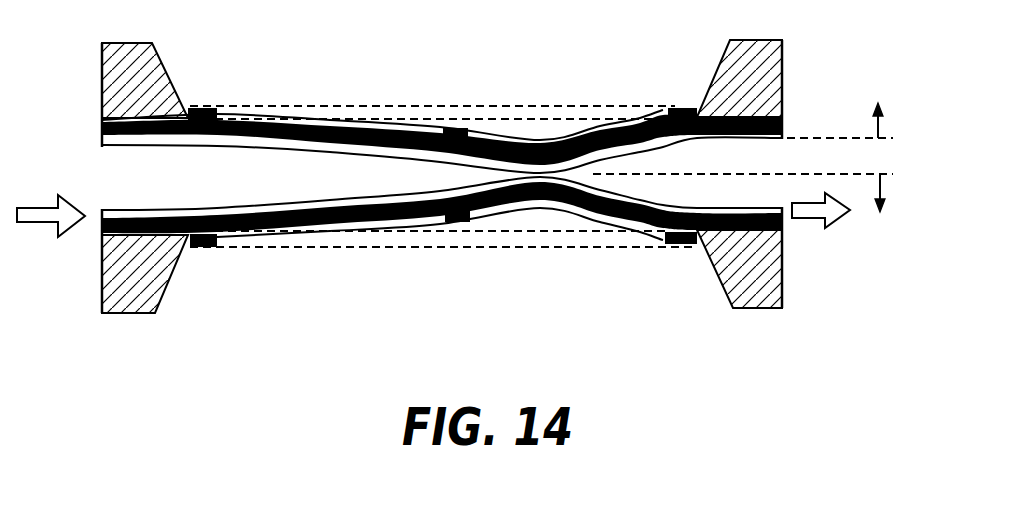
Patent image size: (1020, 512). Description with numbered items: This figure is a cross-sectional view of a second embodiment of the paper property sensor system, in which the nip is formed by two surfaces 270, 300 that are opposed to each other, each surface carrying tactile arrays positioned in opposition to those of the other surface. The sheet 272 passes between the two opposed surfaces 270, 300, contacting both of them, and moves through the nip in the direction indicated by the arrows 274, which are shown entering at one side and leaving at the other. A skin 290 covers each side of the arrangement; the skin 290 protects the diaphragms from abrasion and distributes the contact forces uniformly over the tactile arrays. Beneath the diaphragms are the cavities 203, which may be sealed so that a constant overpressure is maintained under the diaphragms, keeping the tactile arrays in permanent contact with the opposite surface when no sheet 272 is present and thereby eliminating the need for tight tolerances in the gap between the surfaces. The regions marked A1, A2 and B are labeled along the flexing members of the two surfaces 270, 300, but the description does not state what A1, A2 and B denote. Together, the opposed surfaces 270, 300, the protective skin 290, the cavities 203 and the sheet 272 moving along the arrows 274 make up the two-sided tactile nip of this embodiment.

The sheet 272 is at (600, 208).
The skin 290 is at (102, 128).
The cavities 203 is at (532, 106).
The arrows 274 is at (23, 207).
The surface 300 is at (835, 138).
The surface 270 is at (850, 175).
The first electrode region A1 is at (197, 112).
The second electrode region A2 is at (675, 108).
The central electrode region B is at (458, 128).